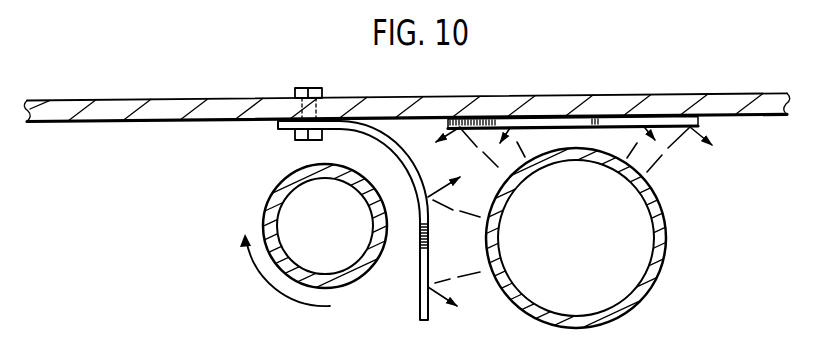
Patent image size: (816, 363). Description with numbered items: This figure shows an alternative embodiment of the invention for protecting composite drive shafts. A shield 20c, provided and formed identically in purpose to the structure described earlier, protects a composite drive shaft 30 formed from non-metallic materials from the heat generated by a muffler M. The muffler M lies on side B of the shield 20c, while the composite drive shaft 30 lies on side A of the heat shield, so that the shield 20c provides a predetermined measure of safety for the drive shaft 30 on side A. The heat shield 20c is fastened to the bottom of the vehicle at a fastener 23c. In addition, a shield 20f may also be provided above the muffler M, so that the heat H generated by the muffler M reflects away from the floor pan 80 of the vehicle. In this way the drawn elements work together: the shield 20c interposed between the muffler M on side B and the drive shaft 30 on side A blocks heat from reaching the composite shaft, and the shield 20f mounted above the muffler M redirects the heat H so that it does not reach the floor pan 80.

The floor pan 80 is at (690, 98).
The fastener 23c is at (299, 87).
The shield 20c is at (422, 303).
The shield 20f is at (552, 119).
The composite drive shaft 30 is at (268, 200).
The muffler M is at (668, 257).
The side A of the heat shield A is at (458, 196).
The side B of the shield B is at (454, 268).
The heat H is at (669, 152).